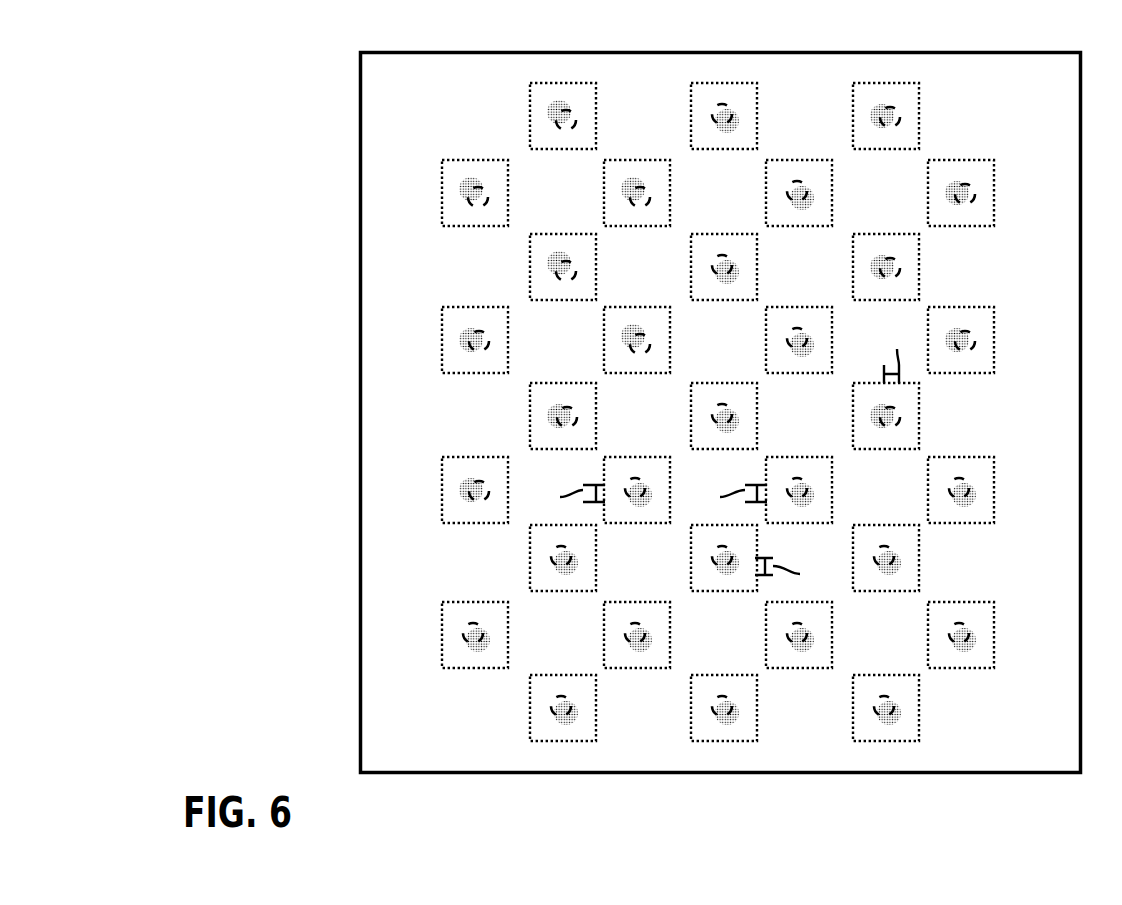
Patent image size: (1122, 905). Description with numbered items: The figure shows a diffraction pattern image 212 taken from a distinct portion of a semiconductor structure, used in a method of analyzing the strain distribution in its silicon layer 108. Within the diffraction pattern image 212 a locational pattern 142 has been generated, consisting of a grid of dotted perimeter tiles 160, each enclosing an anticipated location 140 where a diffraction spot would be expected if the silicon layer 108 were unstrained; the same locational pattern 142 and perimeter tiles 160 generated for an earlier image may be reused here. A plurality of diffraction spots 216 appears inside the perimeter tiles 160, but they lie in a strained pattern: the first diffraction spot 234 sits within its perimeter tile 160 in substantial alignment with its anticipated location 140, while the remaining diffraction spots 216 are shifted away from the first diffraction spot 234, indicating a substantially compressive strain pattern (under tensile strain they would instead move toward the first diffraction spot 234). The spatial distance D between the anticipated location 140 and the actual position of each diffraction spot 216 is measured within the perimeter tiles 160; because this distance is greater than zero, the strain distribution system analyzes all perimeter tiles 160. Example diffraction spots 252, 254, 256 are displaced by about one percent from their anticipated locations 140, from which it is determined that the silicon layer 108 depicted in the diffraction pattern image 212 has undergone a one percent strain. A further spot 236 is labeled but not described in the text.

The diffraction pattern image 212 is at (318, 70).
The silicon layer 108 is at (383, 201).
The diffraction spots 216 is at (719, 131).
The perimeter tiles 160 is at (596, 272).
The anticipated locations 140 is at (484, 624).
The locational pattern 142 is at (425, 343).
The first diffraction spot 234 is at (726, 412).
The second sensing element 236 is at (885, 409).
The diffraction spot 252 is at (816, 492).
The diffraction spot 254 is at (722, 575).
The diffraction spot 256 is at (635, 507).